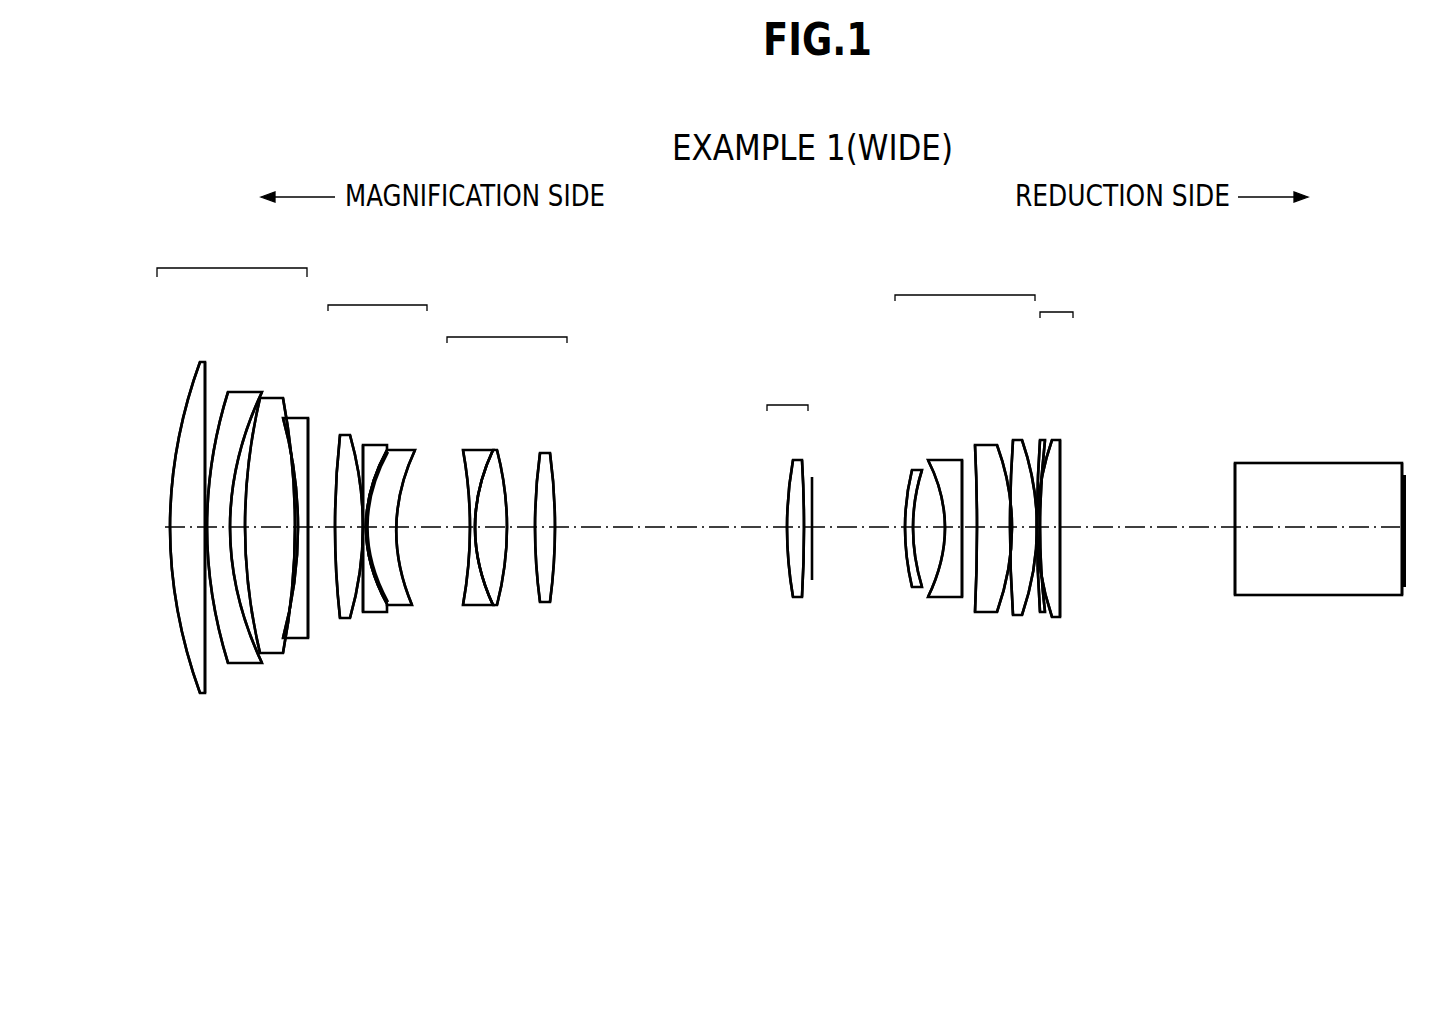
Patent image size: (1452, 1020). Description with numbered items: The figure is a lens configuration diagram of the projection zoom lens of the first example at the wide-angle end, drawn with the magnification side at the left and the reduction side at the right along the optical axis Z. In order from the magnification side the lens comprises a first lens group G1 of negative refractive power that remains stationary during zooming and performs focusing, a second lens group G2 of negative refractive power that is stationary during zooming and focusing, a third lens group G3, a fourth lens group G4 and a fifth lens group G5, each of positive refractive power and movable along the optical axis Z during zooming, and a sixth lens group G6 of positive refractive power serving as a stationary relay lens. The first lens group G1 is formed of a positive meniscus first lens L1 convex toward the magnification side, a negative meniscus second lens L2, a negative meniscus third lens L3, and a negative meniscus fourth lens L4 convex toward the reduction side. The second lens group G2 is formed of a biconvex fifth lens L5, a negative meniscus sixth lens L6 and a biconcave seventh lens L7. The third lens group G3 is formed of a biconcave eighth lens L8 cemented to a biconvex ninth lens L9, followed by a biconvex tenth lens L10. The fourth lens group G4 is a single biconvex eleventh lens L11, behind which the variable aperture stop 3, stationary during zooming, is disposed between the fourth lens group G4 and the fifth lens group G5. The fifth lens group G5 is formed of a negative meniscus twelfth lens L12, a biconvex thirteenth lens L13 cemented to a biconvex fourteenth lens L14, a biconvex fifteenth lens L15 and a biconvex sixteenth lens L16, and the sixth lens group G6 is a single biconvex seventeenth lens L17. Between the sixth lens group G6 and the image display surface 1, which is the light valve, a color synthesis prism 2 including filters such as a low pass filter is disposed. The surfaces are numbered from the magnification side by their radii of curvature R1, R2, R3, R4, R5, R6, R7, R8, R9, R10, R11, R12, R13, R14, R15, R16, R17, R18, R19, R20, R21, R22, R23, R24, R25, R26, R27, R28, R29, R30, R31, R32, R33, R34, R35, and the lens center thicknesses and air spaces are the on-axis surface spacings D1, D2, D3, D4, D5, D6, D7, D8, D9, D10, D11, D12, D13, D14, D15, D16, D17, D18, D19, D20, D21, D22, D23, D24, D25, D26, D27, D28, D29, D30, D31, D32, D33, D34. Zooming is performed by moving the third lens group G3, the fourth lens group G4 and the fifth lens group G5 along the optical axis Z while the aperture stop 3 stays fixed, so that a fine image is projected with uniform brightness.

The image display surface 1 is at (1406, 588).
The color synthesis prism 2 is at (1310, 597).
The variable aperture stop 3 is at (813, 582).
The optical axis Z is at (722, 532).
The first lens group G1 is at (232, 258).
The second lens group G2 is at (377, 293).
The third lens group G3 is at (507, 325).
The fourth lens group G4 is at (787, 393).
The fifth lens group G5 is at (965, 282).
The sixth lens group G6 is at (1057, 300).
The first lens L1 is at (203, 695).
The second lens L2 is at (246, 665).
The third lens L3 is at (272, 655).
The fourth lens L4 is at (298, 640).
The fifth lens L5 is at (343, 620).
The sixth lens L6 is at (375, 614).
The seventh lens L7 is at (401, 607).
The eighth lens L8 is at (476, 607).
The ninth lens L9 is at (499, 607).
The tenth lens L10 is at (547, 604).
The eleventh lens L11 is at (797, 599).
The twelfth lens L12 is at (915, 590).
The thirteenth lens L13 is at (942, 600).
The fourteenth lens L14 is at (985, 614).
The fifteenth lens L15 is at (1017, 618).
The sixteenth lens L16 is at (1042, 614).
The seventeenth lens L17 is at (1057, 620).
The first lens surface R1 is at (172, 522).
The second lens surface R2 is at (205, 505).
The third lens surface R3 is at (222, 420).
The fourth lens surface R4 is at (248, 430).
The fifth lens surface R5 is at (256, 440).
The sixth lens surface R6 is at (290, 450).
The seventh lens surface R7 is at (294, 460).
The eighth lens surface R8 is at (309, 445).
The ninth lens surface R9 is at (338, 450).
The tenth lens surface R10 is at (353, 445).
The eleventh lens surface R11 is at (364, 455).
The twelfth lens surface R12 is at (377, 470).
The thirteenth lens surface R13 is at (381, 480).
The fourteenth lens surface R14 is at (408, 470).
The fifteenth lens surface R15 is at (465, 455).
The sixteenth lens surface R16 is at (489, 460).
The seventeenth lens surface R17 is at (500, 465).
The eighteenth lens surface R18 is at (539, 470).
The nineteenth lens surface R19 is at (554, 480).
The twentieth lens surface R20 is at (789, 490).
The twenty-first lens surface R21 is at (802, 470).
The twenty-second surface R22 is at (907, 490).
The twenty-third lens surface R23 is at (916, 490).
The twenty-fourth lens surface R24 is at (932, 470).
The twenty-fifth lens surface R25 is at (961, 470).
The twenty-sixth lens surface R26 is at (975, 460).
The twenty-seventh lens surface R27 is at (999, 460).
The twenty-eighth lens surface R28 is at (1012, 450).
The twenty-ninth lens surface R29 is at (1023, 450).
The thirtieth lens surface R30 is at (1040, 455).
The thirty-first lens surface R31 is at (1045, 460).
The thirty-second lens surface R32 is at (1051, 448).
The thirty-third lens surface R33 is at (1061, 455).
The thirty-fourth surface R34 is at (1235, 487).
The thirty-fifth surface R35 is at (1402, 468).
The first on-axis surface spacing D1 is at (190, 540).
The second on-axis surface spacing D2 is at (208, 556).
The third on-axis surface spacing D3 is at (218, 575).
The fourth on-axis surface spacing D4 is at (240, 540).
The fifth on-axis surface spacing D5 is at (255, 482).
The sixth on-axis surface spacing D6 is at (296, 524).
The seventh on-axis surface spacing D7 is at (304, 576).
The eighth on-axis surface spacing D8 is at (322, 602).
The ninth on-axis surface spacing D9 is at (345, 620).
The tenth on-axis surface spacing D10 is at (358, 600).
The eleventh on-axis surface spacing D11 is at (368, 497).
The twelfth on-axis surface spacing D12 is at (386, 590).
The thirteenth on-axis surface spacing D13 is at (391, 527).
The fourteenth on-axis surface spacing D14 is at (409, 545).
The fifteenth on-axis surface spacing D15 is at (475, 547).
The sixteenth on-axis surface spacing D16 is at (503, 500).
The seventeenth on-axis surface spacing D17 is at (525, 545).
The eighteenth on-axis surface spacing D18 is at (547, 520).
The nineteenth on-axis surface spacing D19 is at (694, 545).
The twentieth on-axis surface spacing D20 is at (796, 520).
The twenty-first on-axis surface spacing D21 is at (808, 545).
The twenty-second on-axis surface spacing D22 is at (898, 540).
The twenty-third on-axis surface spacing D23 is at (910, 520).
The twenty-fourth on-axis surface spacing D24 is at (925, 500).
The twenty-fifth on-axis surface spacing D25 is at (948, 575).
The twenty-sixth on-axis surface spacing D26 is at (968, 590).
The twenty-seventh on-axis surface spacing D27 is at (986, 612).
The twenty-eighth on-axis surface spacing D28 is at (1012, 600).
The twenty-ninth on-axis surface spacing D29 is at (1030, 500).
The thirtieth on-axis surface spacing D30 is at (1038, 580).
The thirty-first on-axis surface spacing D31 is at (1042, 520).
The thirty-second on-axis surface spacing D32 is at (1049, 560).
The thirty-third on-axis surface spacing D33 is at (1203, 508).
The thirty-fourth on-axis surface spacing D34 is at (1292, 532).